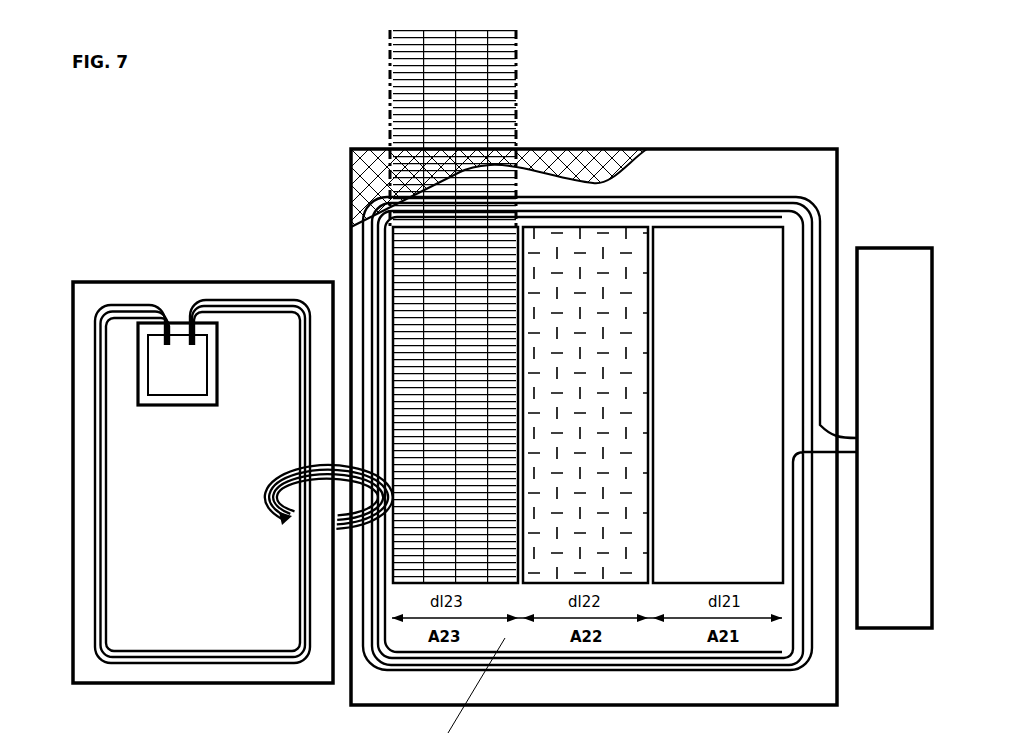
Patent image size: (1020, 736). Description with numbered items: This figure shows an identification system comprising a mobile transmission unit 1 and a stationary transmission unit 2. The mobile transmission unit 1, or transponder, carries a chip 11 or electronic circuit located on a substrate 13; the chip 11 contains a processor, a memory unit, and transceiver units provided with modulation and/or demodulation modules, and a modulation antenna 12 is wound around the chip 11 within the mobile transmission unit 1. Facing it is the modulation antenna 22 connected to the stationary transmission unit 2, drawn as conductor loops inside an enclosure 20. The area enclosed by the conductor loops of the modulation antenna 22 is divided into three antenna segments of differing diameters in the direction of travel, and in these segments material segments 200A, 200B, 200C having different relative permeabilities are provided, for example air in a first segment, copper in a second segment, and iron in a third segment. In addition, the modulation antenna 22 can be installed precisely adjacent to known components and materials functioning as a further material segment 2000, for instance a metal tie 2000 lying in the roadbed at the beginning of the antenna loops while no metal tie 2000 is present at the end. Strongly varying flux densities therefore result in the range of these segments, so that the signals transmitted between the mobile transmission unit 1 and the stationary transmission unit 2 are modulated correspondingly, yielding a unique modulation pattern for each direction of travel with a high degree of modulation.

The mobile transmission unit 1 is at (155, 279).
The chip 11 is at (178, 332).
The modulation antenna 12 is at (283, 293).
The substrate 13 is at (245, 274).
The stationary transmission unit 2 is at (894, 438).
The antenna module 20 is at (777, 148).
The modulation antenna 22 is at (805, 195).
The material segment 200A is at (705, 260).
The material segment 200B is at (587, 225).
The material segment 200C is at (357, 148).
The metal tie 2000 is at (388, 52).